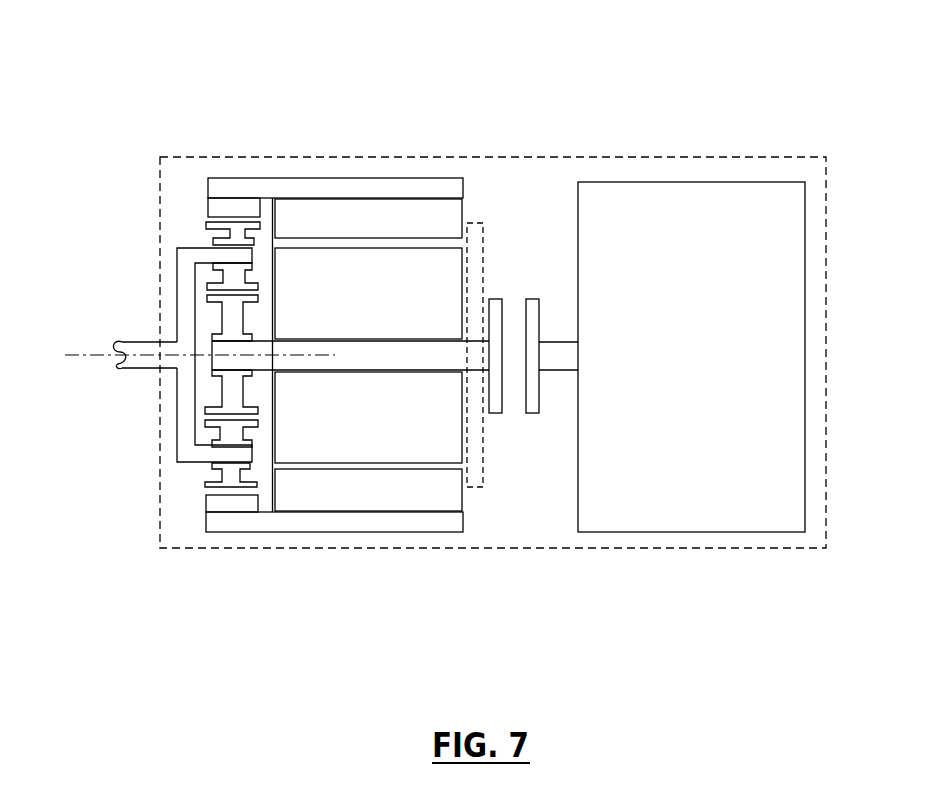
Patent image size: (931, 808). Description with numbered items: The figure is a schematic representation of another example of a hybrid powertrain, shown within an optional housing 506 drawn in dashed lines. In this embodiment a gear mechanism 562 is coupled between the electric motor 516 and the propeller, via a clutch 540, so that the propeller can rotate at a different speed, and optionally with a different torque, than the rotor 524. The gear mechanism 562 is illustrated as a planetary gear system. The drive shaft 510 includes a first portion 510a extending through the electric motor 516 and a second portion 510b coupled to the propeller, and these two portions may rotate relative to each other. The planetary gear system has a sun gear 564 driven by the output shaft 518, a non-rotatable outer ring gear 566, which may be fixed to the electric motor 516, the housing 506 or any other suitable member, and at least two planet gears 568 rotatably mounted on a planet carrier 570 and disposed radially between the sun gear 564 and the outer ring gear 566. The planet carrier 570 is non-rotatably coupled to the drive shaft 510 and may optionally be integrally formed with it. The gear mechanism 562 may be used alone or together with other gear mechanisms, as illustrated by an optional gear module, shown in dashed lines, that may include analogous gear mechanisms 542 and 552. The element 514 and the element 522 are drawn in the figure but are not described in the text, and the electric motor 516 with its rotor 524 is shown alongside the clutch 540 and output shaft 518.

The housing 506 is at (297, 157).
The drive shaft 510 is at (148, 330).
The first portion 510a is at (327, 450).
The second portion 510b is at (131, 362).
The motor 514 is at (678, 203).
The electric motor 516 is at (390, 178).
The output shaft 518 is at (556, 352).
The housing 522 is at (395, 512).
The rotor 524 is at (453, 273).
The clutch 540 is at (514, 432).
The gear mechanism 542 is at (467, 223).
The gear mechanism 552 is at (475, 355).
The gear mechanism 562 is at (192, 178).
The sun gear 564 is at (225, 314).
The outer ring gear 566 is at (218, 207).
The planet gears 568 is at (226, 232).
The planet carrier 570 is at (183, 432).